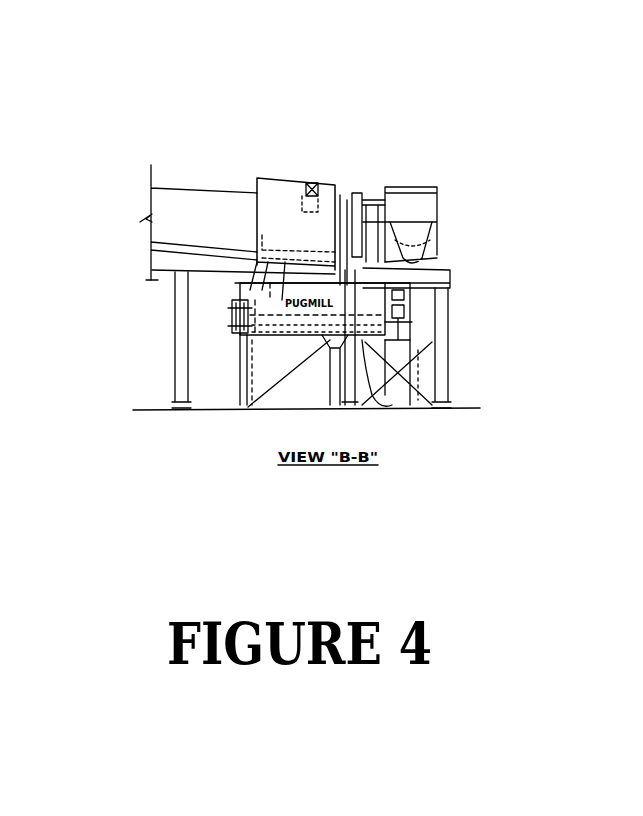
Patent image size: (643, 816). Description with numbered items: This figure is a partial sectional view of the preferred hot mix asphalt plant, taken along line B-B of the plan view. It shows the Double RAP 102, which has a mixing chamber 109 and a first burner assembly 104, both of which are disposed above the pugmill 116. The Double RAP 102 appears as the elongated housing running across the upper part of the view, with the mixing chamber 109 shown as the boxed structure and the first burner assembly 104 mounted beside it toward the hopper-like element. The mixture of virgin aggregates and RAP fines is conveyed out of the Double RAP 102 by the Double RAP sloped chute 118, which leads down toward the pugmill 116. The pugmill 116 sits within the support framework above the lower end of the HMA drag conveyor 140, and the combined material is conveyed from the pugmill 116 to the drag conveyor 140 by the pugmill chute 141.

The Double RAP 102 is at (219, 188).
The first burner assembly 104 is at (363, 193).
The mixing chamber 109 is at (272, 195).
The pugmill 116 is at (240, 335).
The Double RAP sloped chute 118 is at (240, 288).
The HMA drag conveyor 140 is at (430, 362).
The pugmill chute 141 is at (374, 338).